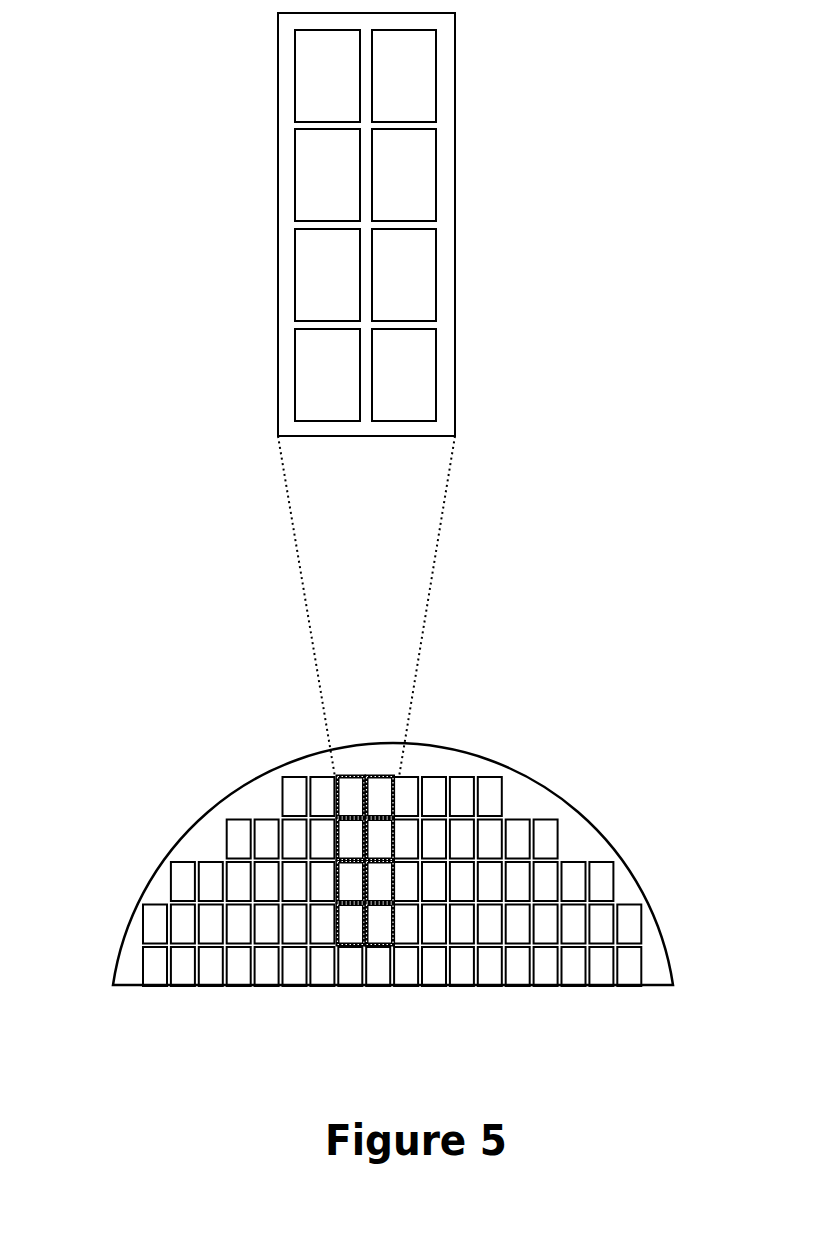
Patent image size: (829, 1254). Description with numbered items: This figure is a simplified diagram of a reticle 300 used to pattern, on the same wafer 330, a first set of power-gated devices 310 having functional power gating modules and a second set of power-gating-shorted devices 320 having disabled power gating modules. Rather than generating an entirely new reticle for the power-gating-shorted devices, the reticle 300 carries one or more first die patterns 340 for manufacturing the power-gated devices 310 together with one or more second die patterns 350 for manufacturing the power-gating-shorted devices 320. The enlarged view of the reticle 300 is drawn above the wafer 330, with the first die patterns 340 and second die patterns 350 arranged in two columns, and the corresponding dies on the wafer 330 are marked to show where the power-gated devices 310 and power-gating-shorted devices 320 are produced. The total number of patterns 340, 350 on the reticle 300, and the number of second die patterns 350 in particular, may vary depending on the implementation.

The reticle 300 is at (277, 223).
The power-gated devices 310 is at (337, 777).
The power-gating-shorted devices 320 is at (393, 778).
The wafer 330 is at (133, 965).
The first die patterns 340 is at (427, 387).
The second die patterns 350 is at (427, 287).